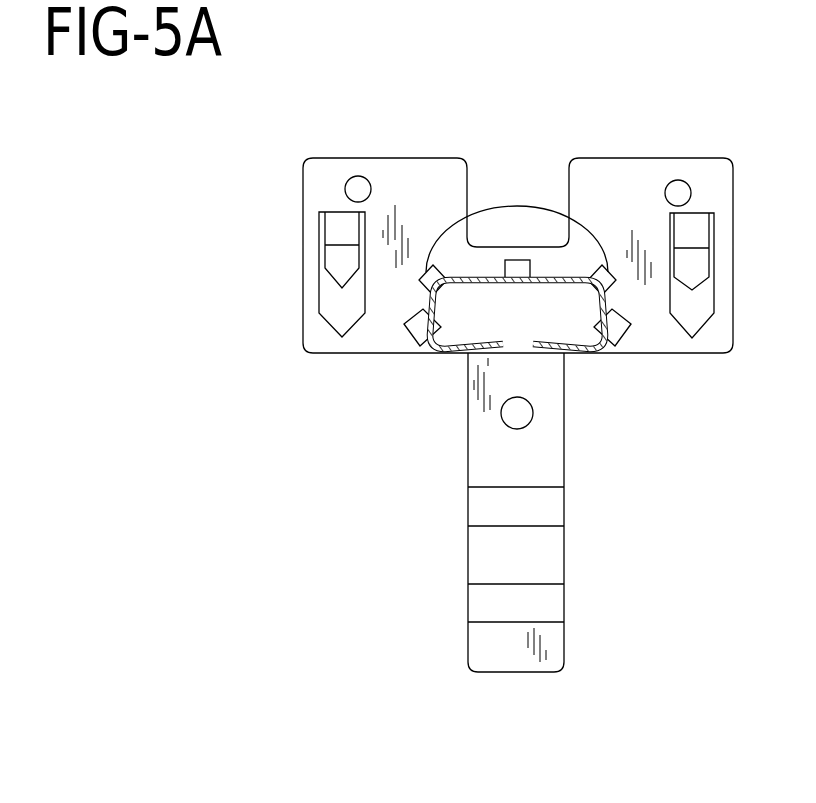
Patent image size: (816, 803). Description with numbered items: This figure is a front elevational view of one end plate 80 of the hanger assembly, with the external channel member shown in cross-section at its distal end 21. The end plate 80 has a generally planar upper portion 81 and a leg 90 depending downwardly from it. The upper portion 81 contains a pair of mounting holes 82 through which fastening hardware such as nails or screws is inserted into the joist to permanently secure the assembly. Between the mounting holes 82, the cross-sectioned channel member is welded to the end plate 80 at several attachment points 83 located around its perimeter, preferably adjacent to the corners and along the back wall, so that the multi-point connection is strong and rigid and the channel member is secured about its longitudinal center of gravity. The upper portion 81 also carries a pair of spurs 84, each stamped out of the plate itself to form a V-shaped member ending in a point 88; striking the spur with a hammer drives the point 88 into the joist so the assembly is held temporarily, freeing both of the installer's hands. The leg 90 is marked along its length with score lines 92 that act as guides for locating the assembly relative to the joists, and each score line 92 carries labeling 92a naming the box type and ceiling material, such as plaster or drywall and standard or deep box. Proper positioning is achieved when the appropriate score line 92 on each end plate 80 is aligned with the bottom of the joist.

The distal end 21 is at (427, 303).
The end plate 80 is at (236, 397).
The upper portion 81 is at (410, 182).
The mounting holes 82 is at (355, 192).
The attachment points 83 is at (520, 262).
The spurs 84 is at (347, 236).
The point 88 is at (350, 288).
The leg 90 is at (554, 435).
The score lines 92 is at (468, 490).
The labeling 92a is at (553, 472).